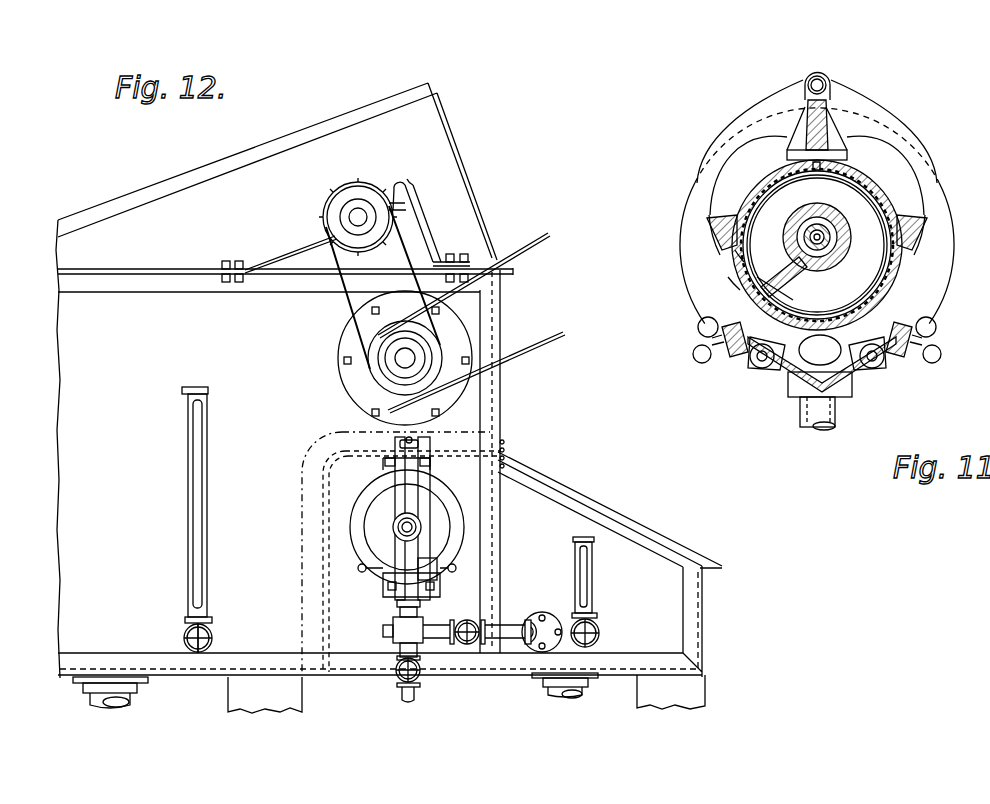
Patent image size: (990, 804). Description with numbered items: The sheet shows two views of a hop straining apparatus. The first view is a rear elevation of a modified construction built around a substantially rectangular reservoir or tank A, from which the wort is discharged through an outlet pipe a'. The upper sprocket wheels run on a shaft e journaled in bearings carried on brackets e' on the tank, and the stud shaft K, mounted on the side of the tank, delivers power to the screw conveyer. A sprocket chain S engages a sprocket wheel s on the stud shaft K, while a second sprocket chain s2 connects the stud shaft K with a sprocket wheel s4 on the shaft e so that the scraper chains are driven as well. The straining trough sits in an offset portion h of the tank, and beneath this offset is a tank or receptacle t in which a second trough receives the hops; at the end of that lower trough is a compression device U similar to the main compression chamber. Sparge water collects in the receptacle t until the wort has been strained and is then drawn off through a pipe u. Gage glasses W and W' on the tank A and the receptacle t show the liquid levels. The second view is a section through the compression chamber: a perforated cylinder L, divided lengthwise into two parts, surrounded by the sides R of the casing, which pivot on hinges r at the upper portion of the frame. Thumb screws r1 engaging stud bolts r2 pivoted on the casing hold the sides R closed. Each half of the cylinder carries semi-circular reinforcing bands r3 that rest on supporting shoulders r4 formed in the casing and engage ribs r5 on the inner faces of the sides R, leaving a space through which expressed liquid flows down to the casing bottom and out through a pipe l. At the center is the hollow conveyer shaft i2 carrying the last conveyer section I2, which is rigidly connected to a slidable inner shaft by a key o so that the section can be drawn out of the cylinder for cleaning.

In FIG. 12, the reservoir or tank A is at (389, 398).
In FIG. 12, the outlet pipe a' is at (123, 697).
In FIG. 12, the gage glass W is at (215, 520).
In FIG. 12, the gage glass W' is at (605, 592).
In FIG. 12, the shaft e is at (358, 203).
In FIG. 12, the bracket e' is at (429, 230).
In FIG. 12, the sprocket wheel s4 is at (327, 203).
In FIG. 12, the second sprocket chain s2 is at (360, 309).
In FIG. 12, the stud shaft K is at (405, 357).
In FIG. 12, the sprocket wheel s is at (408, 375).
In FIG. 12, the sprocket chain S is at (522, 341).
In FIG. 12, the offset portion h is at (588, 461).
In FIG. 12, the compression device U is at (401, 552).
In FIG. 12, the tank or receptacle t is at (472, 644).
In FIG. 12, the pipe u is at (570, 698).
In FIG. 11, the hinge r is at (816, 78).
In FIG. 11, the side of casing R is at (733, 197).
In FIG. 11, the perforated cylinder L is at (965, 248).
In FIG. 11, the supporting shoulder r4 is at (830, 140).
In FIG. 11, the conveyer section I2 is at (817, 227).
In FIG. 11, the conveyer shaft i2 is at (803, 235).
In FIG. 11, the key o is at (827, 243).
In FIG. 11, the reinforcing band r3 is at (740, 250).
In FIG. 11, the rib r5 is at (730, 277).
In FIG. 11, the thumb screw r1 is at (700, 323).
In FIG. 11, the stud bolt r2 is at (710, 340).
In FIG. 11, the pipe l is at (835, 413).